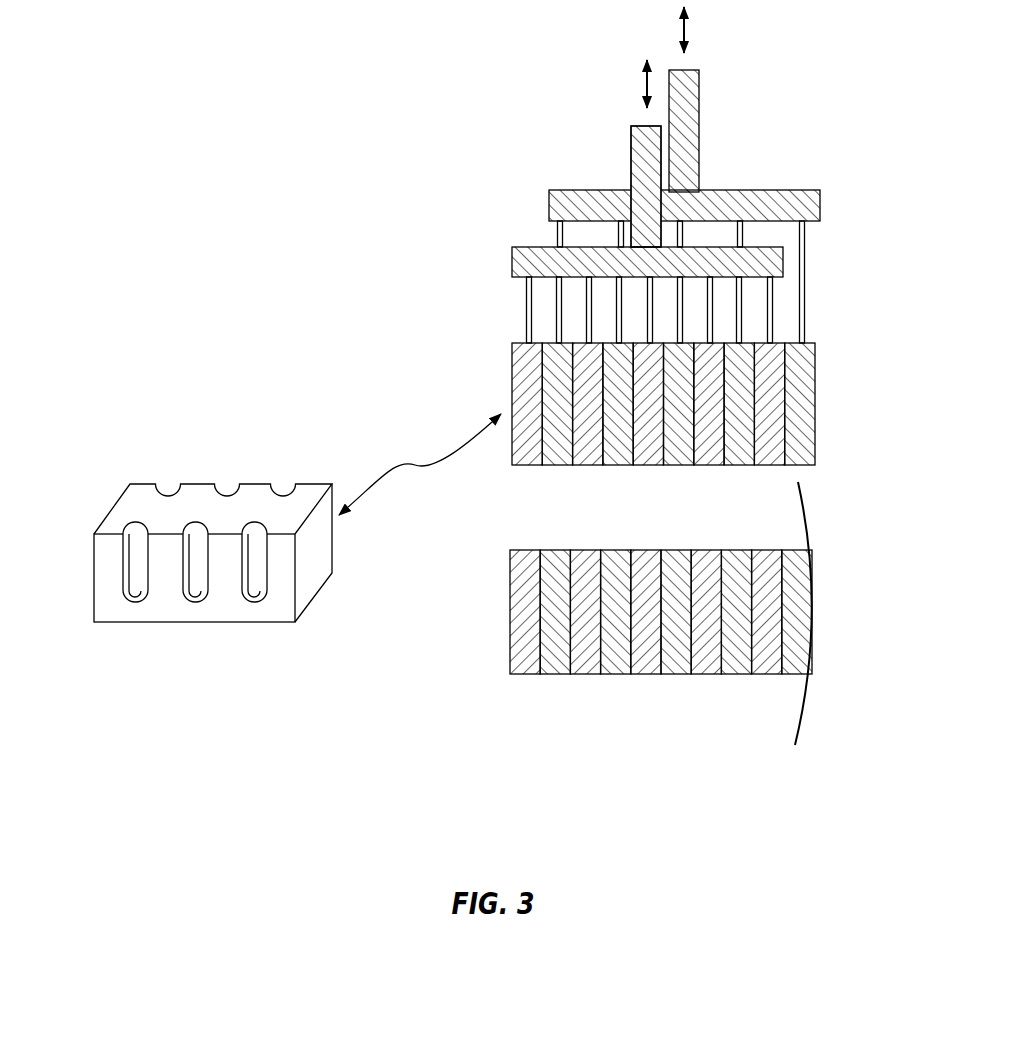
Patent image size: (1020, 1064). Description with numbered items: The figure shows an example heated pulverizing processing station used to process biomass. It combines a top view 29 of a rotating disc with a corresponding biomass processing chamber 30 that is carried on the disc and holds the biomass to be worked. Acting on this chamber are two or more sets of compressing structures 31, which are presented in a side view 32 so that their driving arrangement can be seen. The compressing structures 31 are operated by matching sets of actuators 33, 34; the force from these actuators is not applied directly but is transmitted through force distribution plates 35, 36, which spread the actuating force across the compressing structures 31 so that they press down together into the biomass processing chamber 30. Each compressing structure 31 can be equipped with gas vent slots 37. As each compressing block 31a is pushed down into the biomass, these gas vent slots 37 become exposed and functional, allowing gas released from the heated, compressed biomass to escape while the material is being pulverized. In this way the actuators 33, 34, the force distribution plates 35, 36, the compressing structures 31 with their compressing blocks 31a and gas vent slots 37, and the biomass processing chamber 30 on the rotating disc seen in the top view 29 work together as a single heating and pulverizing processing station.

The top view of rotating disc 29 is at (827, 508).
The biomass processing chamber 30 is at (818, 608).
The compressing structures 31 is at (835, 383).
The compressing block 31a is at (147, 460).
The side view 32 is at (822, 328).
The actuator 33 is at (617, 157).
The actuator 34 is at (727, 108).
The force distribution plate 35 is at (837, 207).
The force distribution plate 36 is at (783, 258).
The gas vent slots 37 is at (135, 590).